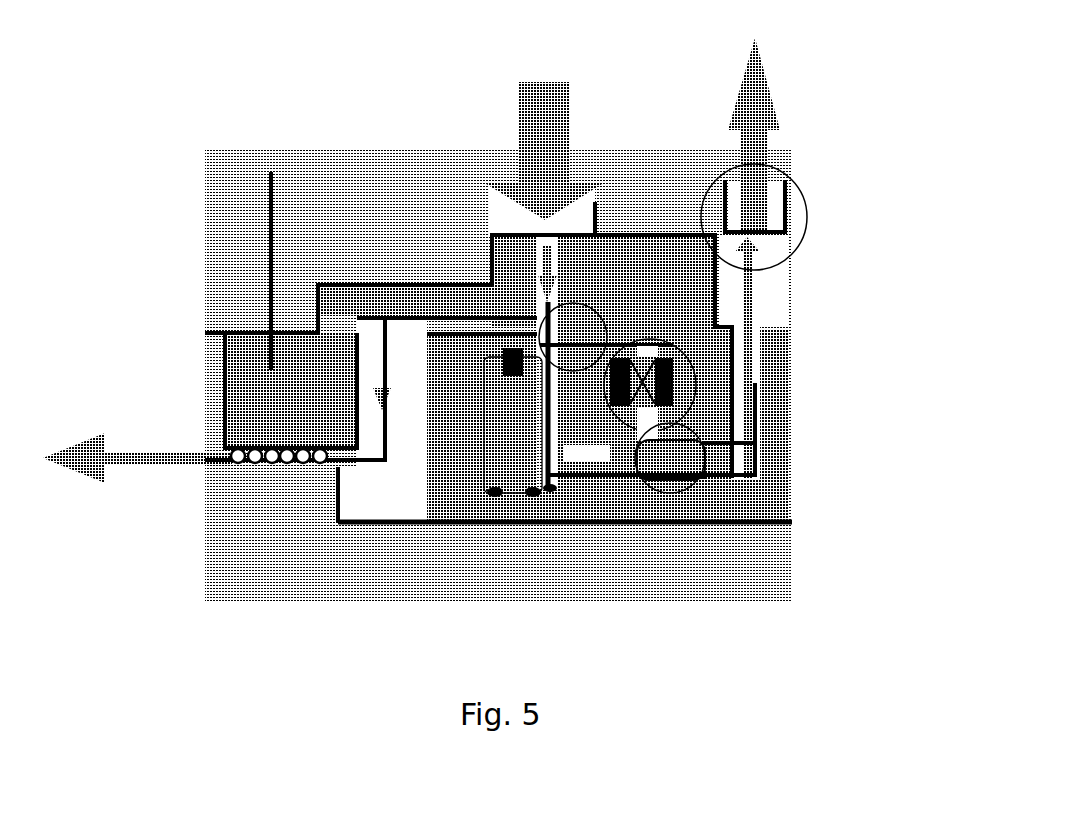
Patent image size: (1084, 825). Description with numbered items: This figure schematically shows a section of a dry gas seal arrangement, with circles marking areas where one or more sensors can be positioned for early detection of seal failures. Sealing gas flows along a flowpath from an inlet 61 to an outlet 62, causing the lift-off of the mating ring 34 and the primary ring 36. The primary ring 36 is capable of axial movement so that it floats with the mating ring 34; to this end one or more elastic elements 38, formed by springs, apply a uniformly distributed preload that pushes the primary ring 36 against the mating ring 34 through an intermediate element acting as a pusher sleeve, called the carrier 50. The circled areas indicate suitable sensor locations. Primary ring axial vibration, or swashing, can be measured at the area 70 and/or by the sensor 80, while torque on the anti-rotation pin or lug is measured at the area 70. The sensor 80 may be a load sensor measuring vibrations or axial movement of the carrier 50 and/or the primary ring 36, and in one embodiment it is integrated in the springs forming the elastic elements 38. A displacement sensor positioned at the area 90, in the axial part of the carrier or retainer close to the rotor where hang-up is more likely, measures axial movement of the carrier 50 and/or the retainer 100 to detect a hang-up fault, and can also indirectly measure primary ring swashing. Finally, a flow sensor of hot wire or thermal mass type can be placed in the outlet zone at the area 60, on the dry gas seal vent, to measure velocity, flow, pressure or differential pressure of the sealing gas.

The retainer 100 is at (611, 253).
The inlet 61 is at (533, 138).
The outlet 62 is at (780, 122).
The flow sensor area on the dry gas seal vent 60 is at (800, 190).
The sensor area for primary ring axial vibration and torque measurement 70 is at (540, 314).
The elastic elements 38 is at (662, 352).
The primary ring 36 is at (582, 427).
The load sensor 80 is at (688, 397).
The carrier 50 is at (713, 457).
The displacement sensor area for carrier/retainer movement control 90 is at (702, 473).
The mating ring 34 is at (514, 457).